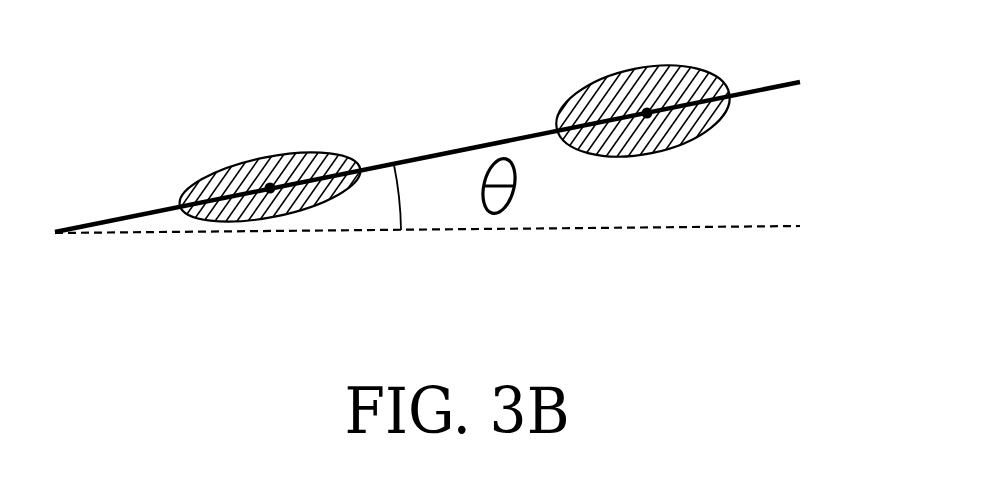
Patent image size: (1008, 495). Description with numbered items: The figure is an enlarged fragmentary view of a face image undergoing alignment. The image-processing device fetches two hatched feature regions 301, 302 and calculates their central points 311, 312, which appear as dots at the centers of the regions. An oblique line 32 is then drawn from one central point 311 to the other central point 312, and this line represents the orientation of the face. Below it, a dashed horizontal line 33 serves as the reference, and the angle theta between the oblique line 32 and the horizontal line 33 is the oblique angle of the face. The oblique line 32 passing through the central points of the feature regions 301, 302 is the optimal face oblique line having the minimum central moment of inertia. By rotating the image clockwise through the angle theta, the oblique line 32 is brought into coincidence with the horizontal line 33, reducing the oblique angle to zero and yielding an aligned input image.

The oblique line 32 is at (757, 87).
The horizontal line 33 is at (763, 224).
The feature region 301 is at (607, 93).
The feature region 302 is at (302, 168).
The central point 311 is at (647, 108).
The central point 312 is at (269, 182).